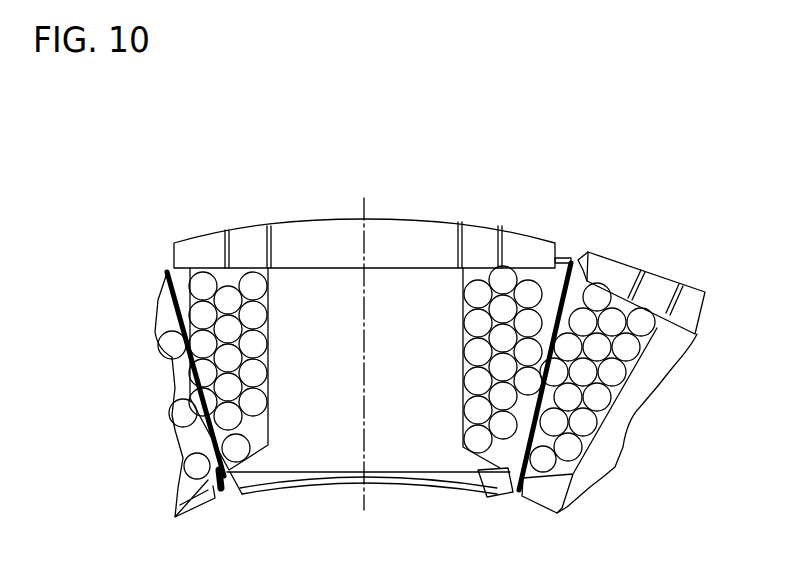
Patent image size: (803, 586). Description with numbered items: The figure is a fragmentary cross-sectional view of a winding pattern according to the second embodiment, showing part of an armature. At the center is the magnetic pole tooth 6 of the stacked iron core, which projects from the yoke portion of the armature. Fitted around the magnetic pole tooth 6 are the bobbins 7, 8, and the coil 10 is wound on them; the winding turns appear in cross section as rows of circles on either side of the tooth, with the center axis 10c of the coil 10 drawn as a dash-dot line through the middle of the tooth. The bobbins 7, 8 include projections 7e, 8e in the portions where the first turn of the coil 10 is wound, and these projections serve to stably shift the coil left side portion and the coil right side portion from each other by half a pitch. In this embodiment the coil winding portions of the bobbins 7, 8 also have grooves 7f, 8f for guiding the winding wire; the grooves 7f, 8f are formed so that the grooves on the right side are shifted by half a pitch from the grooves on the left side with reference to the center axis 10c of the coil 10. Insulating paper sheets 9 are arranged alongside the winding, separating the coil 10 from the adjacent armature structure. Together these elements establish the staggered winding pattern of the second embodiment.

The magnetic pole tooth 6 is at (320, 478).
The bobbin 7 is at (385, 296).
The bobbin 8 is at (385, 296).
The projection 7e is at (527, 219).
The projection 8e is at (479, 266).
The groove 7f is at (265, 240).
The groove 8f is at (263, 309).
The insulating paper sheet 9 is at (586, 276).
The coil 10 is at (507, 430).
The center axis 10c is at (364, 200).